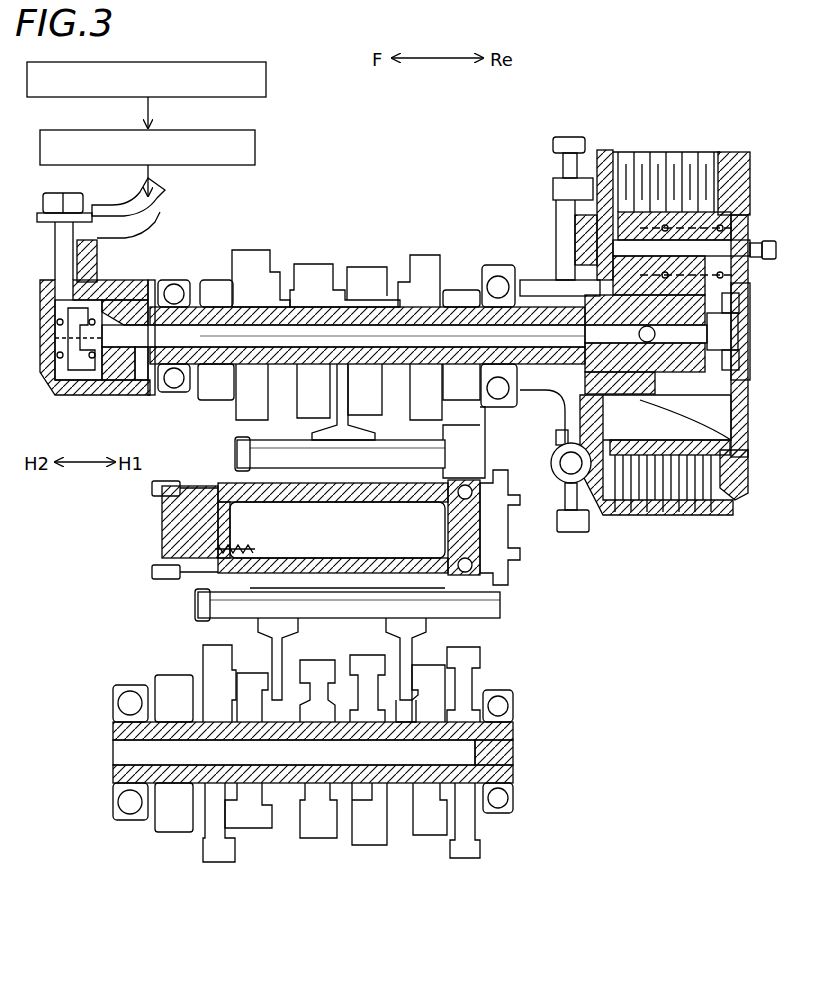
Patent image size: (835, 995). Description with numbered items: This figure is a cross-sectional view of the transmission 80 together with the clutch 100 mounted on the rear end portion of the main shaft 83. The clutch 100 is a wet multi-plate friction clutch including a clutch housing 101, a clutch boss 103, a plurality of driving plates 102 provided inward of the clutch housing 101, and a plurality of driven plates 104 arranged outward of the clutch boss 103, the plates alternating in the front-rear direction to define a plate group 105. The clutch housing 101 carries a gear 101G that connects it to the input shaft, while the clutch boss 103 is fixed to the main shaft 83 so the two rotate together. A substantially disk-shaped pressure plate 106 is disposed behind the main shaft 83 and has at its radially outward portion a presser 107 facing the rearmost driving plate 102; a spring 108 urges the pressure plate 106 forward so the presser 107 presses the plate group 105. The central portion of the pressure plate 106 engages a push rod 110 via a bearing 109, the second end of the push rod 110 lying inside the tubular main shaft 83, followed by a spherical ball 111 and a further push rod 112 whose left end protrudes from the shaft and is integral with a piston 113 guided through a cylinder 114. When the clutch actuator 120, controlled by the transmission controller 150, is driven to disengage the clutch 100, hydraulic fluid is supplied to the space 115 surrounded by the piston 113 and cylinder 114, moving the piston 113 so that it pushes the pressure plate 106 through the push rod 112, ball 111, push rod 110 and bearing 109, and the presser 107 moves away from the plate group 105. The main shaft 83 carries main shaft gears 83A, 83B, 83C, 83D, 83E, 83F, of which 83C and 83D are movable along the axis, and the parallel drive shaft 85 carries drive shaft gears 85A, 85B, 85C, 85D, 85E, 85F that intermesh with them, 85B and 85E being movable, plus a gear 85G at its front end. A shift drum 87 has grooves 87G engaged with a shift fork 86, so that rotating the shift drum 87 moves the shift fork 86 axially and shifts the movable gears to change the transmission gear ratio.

The transmission controller 150 is at (266, 80).
The clutch actuator 120 is at (255, 148).
The piston 113 is at (105, 303).
The cylinder 114 is at (97, 392).
The space 115 is at (62, 375).
The main shaft 83 is at (175, 380).
The push rod 112 is at (440, 330).
The main shaft gear 83A is at (466, 298).
The main shaft gear 83B is at (422, 256).
The main shaft gear 83C is at (368, 268).
The main shaft gear 83D is at (315, 264).
The main shaft gear 83E is at (252, 252).
The main shaft gear 83F is at (212, 283).
The shift fork 86 is at (300, 428).
The shift drum 87 is at (200, 528).
The grooves 87G is at (260, 458).
The drive shaft 85 is at (515, 790).
The drive shaft gear 85A is at (468, 858).
The drive shaft gear 85B is at (428, 835).
The drive shaft gear 85C is at (365, 845).
The drive shaft gear 85D is at (320, 838).
The drive shaft gear 85E is at (250, 828).
The drive shaft gear 85F is at (222, 862).
The gear 85G is at (172, 832).
The transmission 80 is at (690, 108).
The clutch 100 is at (780, 204).
The clutch housing 101 is at (590, 485).
The gear 101G is at (575, 535).
The driving plates 102 is at (725, 162).
The clutch boss 103 is at (720, 428).
The driven plates 104 is at (678, 175).
The plate group 105 is at (633, 150).
The pressure plate 106 is at (750, 345).
The presser 107 is at (738, 168).
The spring 108 is at (740, 222).
The bearing 109 is at (742, 303).
The push rod 110 is at (740, 335).
The ball 111 is at (590, 300).